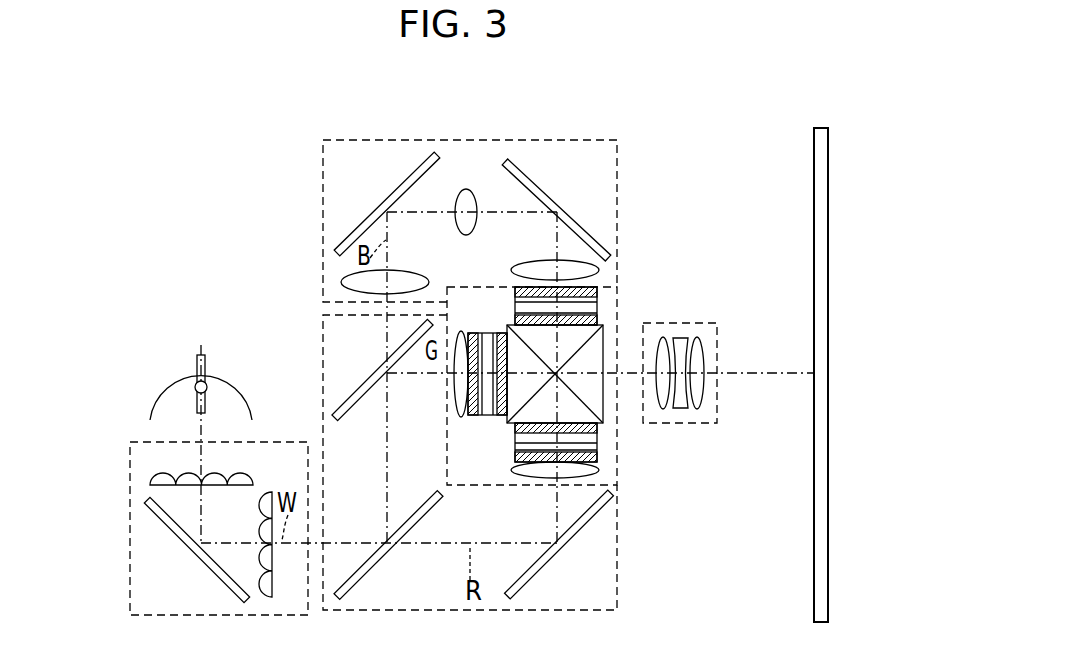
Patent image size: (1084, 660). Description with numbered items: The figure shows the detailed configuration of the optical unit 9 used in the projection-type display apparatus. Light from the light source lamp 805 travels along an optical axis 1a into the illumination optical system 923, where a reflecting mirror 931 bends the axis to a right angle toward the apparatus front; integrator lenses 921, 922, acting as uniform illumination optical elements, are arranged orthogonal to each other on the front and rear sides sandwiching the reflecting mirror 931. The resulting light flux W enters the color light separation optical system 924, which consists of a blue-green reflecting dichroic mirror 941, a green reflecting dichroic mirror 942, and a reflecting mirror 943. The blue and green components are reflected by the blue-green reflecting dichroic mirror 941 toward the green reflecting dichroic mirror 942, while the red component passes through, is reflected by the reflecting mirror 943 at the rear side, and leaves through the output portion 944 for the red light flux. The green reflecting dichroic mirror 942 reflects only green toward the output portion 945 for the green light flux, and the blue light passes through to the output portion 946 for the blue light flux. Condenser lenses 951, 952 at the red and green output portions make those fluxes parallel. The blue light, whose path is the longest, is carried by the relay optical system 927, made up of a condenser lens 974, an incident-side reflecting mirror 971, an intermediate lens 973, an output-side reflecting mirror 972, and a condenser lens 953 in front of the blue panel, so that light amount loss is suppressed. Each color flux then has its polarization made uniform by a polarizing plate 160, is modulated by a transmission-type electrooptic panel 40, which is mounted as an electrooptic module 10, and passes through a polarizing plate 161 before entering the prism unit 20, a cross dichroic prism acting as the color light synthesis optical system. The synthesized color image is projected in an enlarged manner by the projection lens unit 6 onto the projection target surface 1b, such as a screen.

The optical unit 9 is at (262, 144).
The light source lamp 805 is at (160, 386).
The optical axis 1a is at (202, 436).
The projection target surface 1b is at (814, 188).
The illumination optical system 923 is at (128, 488).
The integrator lens 921 is at (236, 484).
The integrator lens 922 is at (264, 495).
The reflecting mirror 931 is at (173, 522).
The relay optical system 927 is at (323, 233).
The color light separation optical system 924 is at (323, 340).
The condenser lens 952 is at (458, 330).
The incident-side reflecting mirror 971 is at (380, 211).
The output-side reflecting mirror 972 is at (566, 216).
The intermediate lens 973 is at (462, 190).
The condenser lens 974 is at (402, 273).
The condenser lens 953 is at (531, 264).
The output portion for the green light flux 945 is at (445, 379).
The output portion for the blue light flux 946 is at (381, 320).
The green reflecting dichroic mirror 942 is at (342, 418).
The blue-green reflecting dichroic mirror 941 is at (380, 560).
The reflecting mirror 943 is at (550, 557).
The output portion for the red light flux 944 is at (550, 486).
The condenser lens 951 is at (600, 470).
The prism unit 20 is at (605, 406).
The polarizing plate 160 is at (576, 321).
The polarizing plate 161 is at (598, 290).
The transmission-type electrooptic panel 40 is at (576, 321).
The electrooptic module 10 is at (576, 321).
The projection lens unit 6 is at (717, 392).